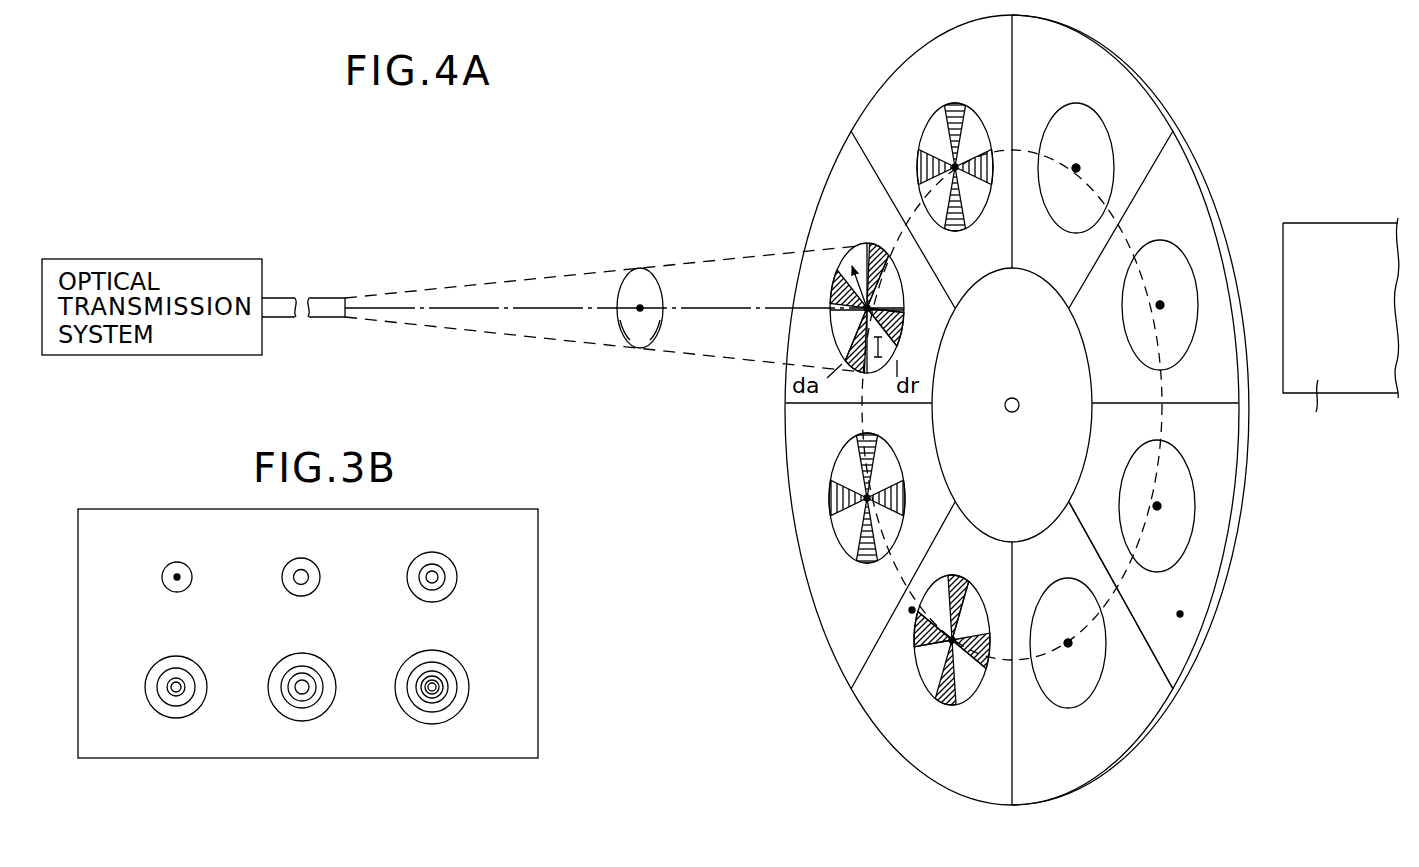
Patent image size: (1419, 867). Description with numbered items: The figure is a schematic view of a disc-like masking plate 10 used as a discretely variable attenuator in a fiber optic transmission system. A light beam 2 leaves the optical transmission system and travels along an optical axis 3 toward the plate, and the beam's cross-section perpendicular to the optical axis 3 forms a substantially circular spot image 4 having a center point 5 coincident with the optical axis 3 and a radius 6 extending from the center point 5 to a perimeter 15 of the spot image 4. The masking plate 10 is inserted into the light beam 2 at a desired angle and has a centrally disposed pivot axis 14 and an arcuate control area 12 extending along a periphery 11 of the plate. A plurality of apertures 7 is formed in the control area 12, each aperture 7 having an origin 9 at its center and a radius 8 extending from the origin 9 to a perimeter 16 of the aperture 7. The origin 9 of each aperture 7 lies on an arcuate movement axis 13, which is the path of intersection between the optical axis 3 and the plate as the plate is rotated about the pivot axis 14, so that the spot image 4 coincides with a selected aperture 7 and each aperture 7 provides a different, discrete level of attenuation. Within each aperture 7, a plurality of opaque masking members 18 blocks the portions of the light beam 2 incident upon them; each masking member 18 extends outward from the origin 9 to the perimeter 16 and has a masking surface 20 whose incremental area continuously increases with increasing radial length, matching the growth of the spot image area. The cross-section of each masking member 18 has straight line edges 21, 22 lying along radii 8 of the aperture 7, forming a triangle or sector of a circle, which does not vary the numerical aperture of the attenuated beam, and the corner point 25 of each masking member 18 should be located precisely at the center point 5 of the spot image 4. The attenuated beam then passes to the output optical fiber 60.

The light beam 2 is at (452, 286).
The optical axis 3 is at (530, 307).
The spot image 4 is at (612, 262).
The center point 5 is at (628, 332).
The radius 6 is at (640, 306).
The aperture 7 is at (890, 136).
The radius 8 is at (850, 272).
The origin 9 is at (850, 318).
The masking plate 10 is at (865, 58).
The periphery 11 is at (1180, 614).
The arcuate control area 12 is at (800, 503).
The arcuate movement axis 13 is at (1139, 247).
The pivot axis 14 is at (1014, 398).
The perimeter 15 is at (650, 340).
The perimeter 16 is at (905, 320).
The masking member 18 is at (895, 277).
The masking surface 20 is at (928, 620).
The straight line edge 21 is at (930, 690).
The straight line edge 22 is at (975, 682).
The corner point 25 is at (925, 661).
The output optical fiber 60 is at (1332, 240).